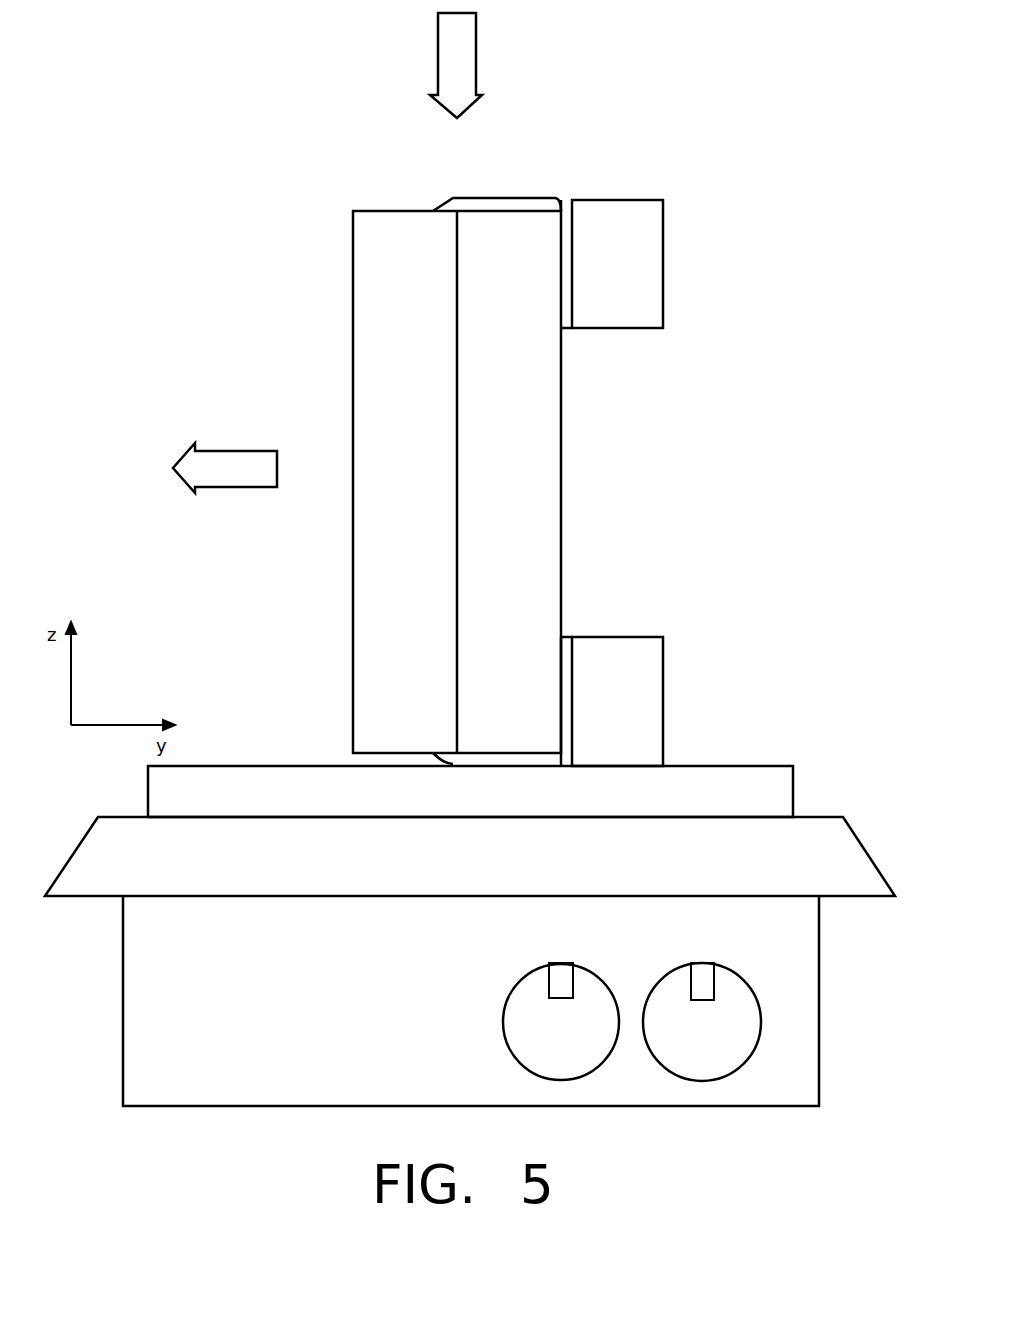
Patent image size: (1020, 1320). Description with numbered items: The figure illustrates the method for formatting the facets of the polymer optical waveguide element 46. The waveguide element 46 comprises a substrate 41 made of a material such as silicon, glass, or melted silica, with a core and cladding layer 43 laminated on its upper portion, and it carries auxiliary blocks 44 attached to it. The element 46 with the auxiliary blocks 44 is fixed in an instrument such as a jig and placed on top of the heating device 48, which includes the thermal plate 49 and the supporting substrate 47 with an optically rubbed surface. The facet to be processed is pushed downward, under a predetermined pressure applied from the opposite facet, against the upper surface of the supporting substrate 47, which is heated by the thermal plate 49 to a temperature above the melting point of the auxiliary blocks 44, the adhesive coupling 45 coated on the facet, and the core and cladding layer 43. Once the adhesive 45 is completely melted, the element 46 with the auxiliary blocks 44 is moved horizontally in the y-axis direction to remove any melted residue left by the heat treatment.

The substrate 41 is at (372, 360).
The core and cladding layer 43 is at (540, 442).
The auxiliary blocks 44 is at (640, 272).
The adhesive coupling 45 is at (567, 228).
The polymer optical waveguide element 46 is at (561, 200).
The supporting substrate 47 is at (770, 780).
The heating device 48 is at (820, 1047).
The thermal plate 49 is at (823, 848).